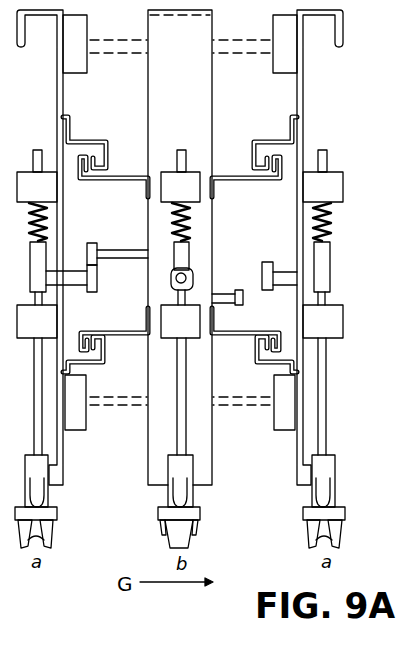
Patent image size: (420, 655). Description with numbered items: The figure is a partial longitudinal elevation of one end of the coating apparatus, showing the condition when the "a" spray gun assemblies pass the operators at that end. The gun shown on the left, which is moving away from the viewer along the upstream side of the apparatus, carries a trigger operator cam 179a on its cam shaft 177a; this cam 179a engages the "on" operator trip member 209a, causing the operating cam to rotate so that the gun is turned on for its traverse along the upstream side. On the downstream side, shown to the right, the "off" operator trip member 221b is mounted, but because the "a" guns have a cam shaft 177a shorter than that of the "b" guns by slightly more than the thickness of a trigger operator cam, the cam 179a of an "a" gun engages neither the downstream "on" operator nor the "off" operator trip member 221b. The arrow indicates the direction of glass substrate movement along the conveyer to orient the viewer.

The "on" operator trip member 209a is at (92, 243).
The trigger operator cam 179a is at (97, 285).
The cam shaft 177a is at (72, 283).
The "off" operator trip member 221b is at (243, 305).